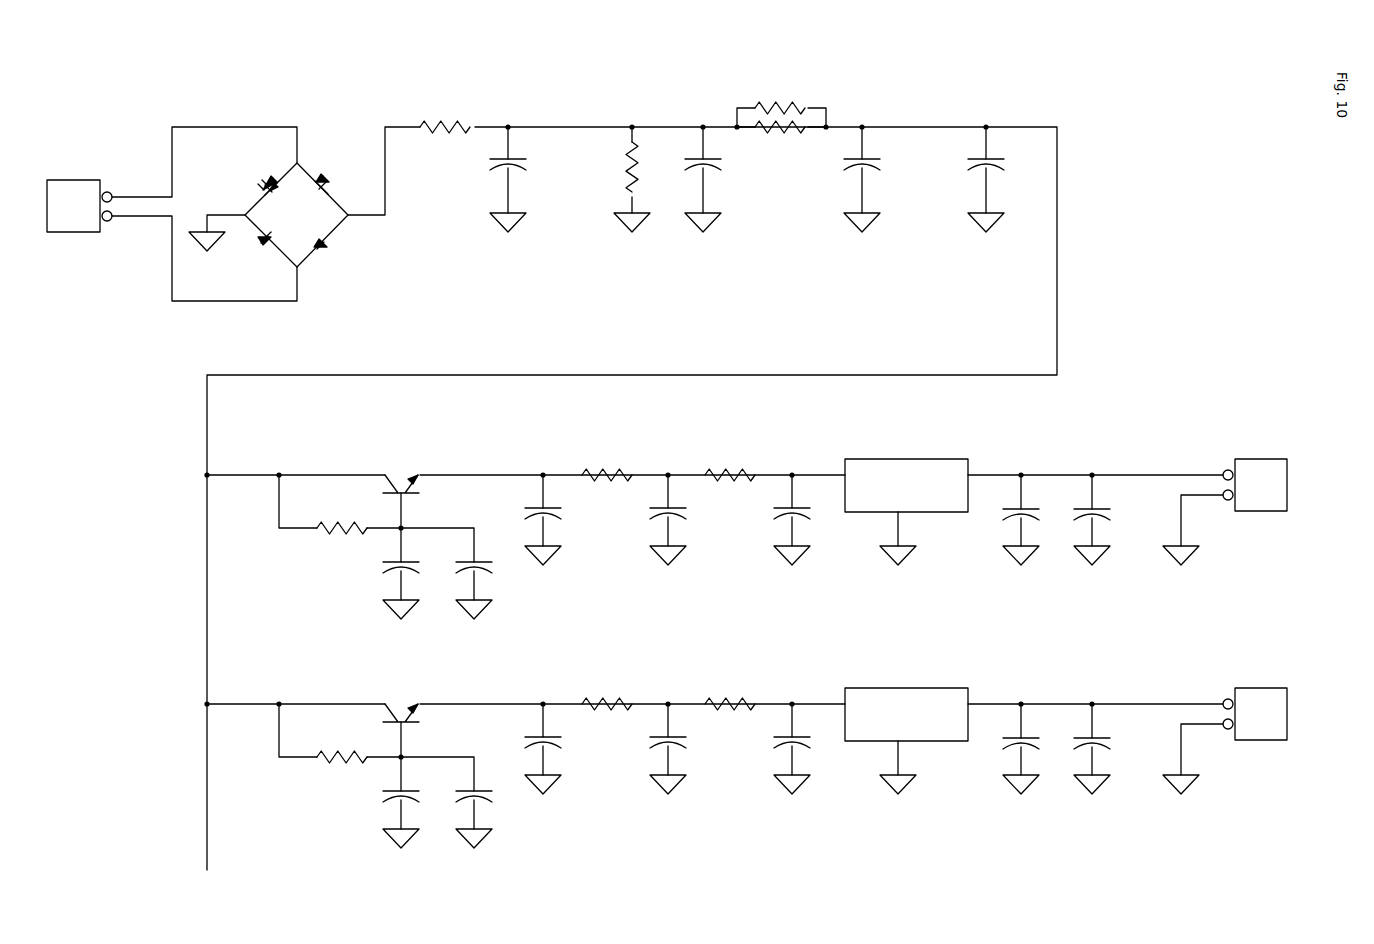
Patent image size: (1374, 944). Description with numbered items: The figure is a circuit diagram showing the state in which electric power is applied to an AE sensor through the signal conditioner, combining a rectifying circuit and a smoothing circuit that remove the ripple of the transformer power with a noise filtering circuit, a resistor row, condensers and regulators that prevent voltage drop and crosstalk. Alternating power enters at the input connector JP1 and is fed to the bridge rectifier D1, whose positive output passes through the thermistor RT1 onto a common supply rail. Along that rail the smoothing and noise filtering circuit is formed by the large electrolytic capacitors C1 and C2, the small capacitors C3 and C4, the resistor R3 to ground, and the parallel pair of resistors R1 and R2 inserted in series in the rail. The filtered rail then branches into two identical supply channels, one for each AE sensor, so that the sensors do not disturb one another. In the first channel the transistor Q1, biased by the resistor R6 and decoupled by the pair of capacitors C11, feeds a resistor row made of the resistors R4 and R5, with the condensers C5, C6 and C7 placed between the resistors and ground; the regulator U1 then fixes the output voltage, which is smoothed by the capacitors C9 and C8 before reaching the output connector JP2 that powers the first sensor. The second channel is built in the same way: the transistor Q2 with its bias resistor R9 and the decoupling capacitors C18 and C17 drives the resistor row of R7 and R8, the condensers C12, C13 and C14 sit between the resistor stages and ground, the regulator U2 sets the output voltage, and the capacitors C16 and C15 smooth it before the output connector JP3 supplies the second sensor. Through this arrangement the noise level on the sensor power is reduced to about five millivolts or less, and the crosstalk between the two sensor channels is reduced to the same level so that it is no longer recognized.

The AC input connector 30V_AC/0.2A JP1 is at (83, 208).
The bridge rectifier 1A/400V D1 is at (305, 221).
The thermistor 10 RT1 is at (446, 117).
The capacitor 3300uF/50V C1 is at (551, 179).
The resistor 47k R3 is at (646, 179).
The capacitor 0.1uf C3 is at (723, 179).
The resistor 10 R1 is at (781, 93).
The resistor 10 R2 is at (781, 150).
The capacitor 3300uF/50V C2 is at (905, 179).
The capacitor 0.1uf C4 is at (1005, 179).
The transistor 2N2222 Q1 is at (407, 477).
The resistor 1k R6 is at (340, 504).
The capacitors 0.1uf C11 is at (457, 573).
The capacitor 470uf C5 is at (566, 520).
The resistor 100 R4 is at (607, 454).
The capacitor 470uf C6 is at (691, 520).
The resistor 100 R5 is at (730, 454).
The capacitor 470uf C7 is at (815, 520).
The voltage regulator LM78L24/T092 U1 is at (907, 496).
The capacitor 0.1 C9 is at (1034, 520).
The capacitor 1.0uF C8 is at (1113, 520).
The 24V output connector JP2 is at (1225, 503).
The transistor 2N2222 Q2 is at (407, 706).
The resistor 1k R9 is at (340, 733).
The capacitor 0.1uf C18 is at (420, 802).
The capacitor 0.1uf C17 is at (466, 802).
The capacitor 470uf C12 is at (566, 749).
The resistor 100 R7 is at (607, 683).
The capacitor 470uf C13 is at (691, 749).
The resistor 100 R8 is at (730, 683).
The capacitor 470uf C14 is at (815, 749).
The voltage regulator LM78L24/T092 U2 is at (907, 725).
The capacitor 0.1 C16 is at (1037, 749).
The capacitor 1.0uF C15 is at (1113, 749).
The 24V output connector JP3 is at (1225, 732).